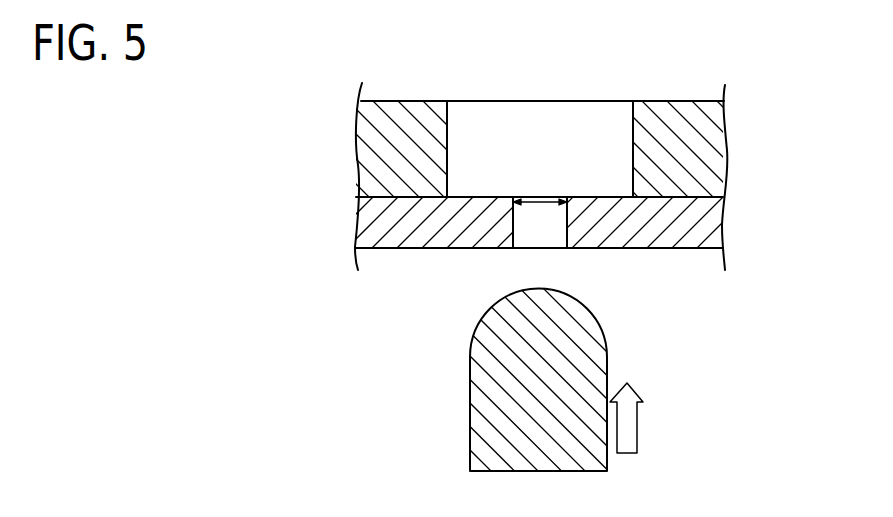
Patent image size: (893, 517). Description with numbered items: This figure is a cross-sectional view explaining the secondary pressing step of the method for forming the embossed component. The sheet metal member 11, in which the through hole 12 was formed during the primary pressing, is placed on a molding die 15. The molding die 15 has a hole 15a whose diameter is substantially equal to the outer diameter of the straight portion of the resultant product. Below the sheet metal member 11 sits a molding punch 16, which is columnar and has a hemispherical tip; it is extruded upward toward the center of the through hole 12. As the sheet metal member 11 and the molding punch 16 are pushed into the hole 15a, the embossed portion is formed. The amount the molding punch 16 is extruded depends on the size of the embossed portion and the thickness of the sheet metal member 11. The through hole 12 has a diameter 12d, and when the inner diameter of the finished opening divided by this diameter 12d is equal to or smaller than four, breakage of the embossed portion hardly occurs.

The sheet metal member 11 is at (703, 249).
The through hole 12 is at (565, 223).
The diameter of the through hole 12d is at (540, 213).
The molding die 15 is at (692, 135).
The hole 15a is at (633, 135).
The molding punch 16 is at (478, 412).